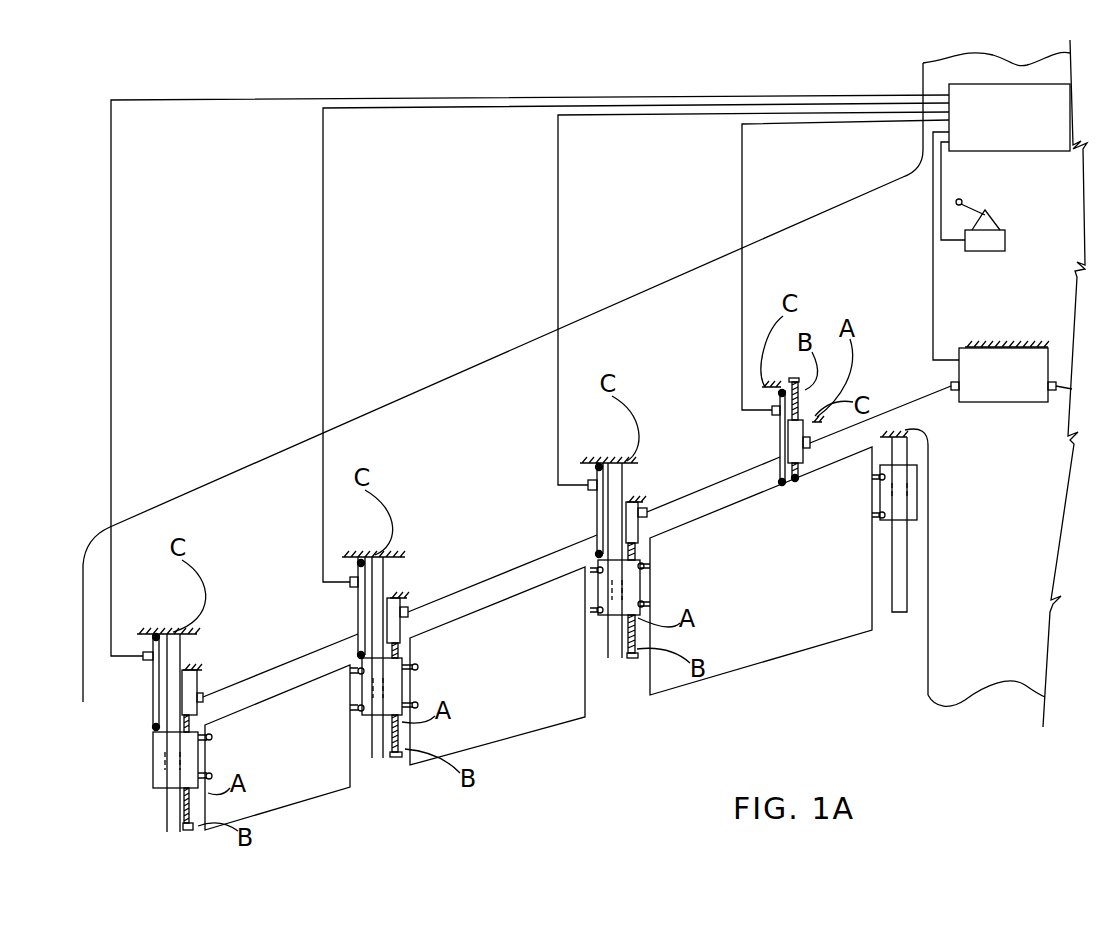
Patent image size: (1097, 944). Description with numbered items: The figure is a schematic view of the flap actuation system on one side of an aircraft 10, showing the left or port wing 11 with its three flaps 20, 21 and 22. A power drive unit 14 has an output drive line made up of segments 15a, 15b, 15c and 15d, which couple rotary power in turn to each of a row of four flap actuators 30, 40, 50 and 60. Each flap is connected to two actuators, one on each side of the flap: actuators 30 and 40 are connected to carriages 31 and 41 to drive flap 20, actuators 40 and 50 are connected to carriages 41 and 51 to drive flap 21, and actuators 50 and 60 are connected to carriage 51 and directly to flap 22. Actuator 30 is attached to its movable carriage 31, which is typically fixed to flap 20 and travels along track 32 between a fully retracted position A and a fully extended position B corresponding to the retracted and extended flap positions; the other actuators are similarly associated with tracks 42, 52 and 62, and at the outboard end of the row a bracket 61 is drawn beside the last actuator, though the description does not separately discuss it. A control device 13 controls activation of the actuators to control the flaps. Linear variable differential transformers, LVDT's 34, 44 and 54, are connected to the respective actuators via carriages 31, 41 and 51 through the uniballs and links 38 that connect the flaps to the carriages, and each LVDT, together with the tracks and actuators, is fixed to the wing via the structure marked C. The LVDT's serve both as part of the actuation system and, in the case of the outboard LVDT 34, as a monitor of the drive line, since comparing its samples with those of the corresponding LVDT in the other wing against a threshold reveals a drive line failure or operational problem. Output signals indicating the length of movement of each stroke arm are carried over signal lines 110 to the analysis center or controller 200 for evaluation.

The aircraft 10 is at (923, 83).
The left wing 11 is at (630, 295).
The control device 13 is at (1005, 247).
The power drive unit 14 is at (1048, 356).
The drive line segment 15a is at (920, 397).
The drive line segment 15b is at (715, 480).
The drive line segment 15c is at (518, 567).
The drive line segment 15d is at (288, 663).
The flap 20 is at (273, 792).
The flap 21 is at (500, 693).
The flap 22 is at (762, 613).
The actuator 30 is at (198, 687).
The carriage 31 is at (152, 768).
The track 32 is at (167, 807).
The LVDT 34 is at (152, 708).
The uniballs and links 38 is at (212, 777).
The actuator 40 is at (403, 597).
The carriage 41 is at (375, 727).
The track 42 is at (378, 760).
The LVDT 44 is at (357, 600).
The actuator 50 is at (640, 496).
The carriage 51 is at (613, 600).
The track 52 is at (613, 660).
The LVDT 54 is at (595, 508).
The actuator 60 is at (822, 440).
The end bracket 61 is at (917, 507).
The track 62 is at (907, 612).
The signal lines 110 is at (110, 195).
The controller 200 is at (1009, 117).